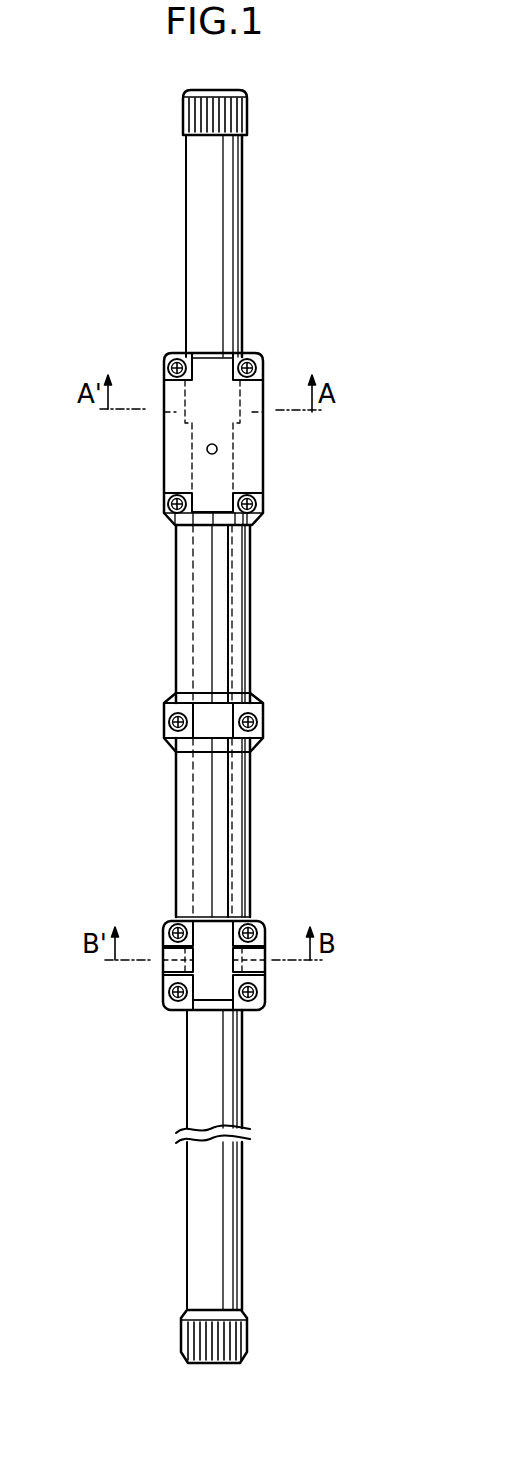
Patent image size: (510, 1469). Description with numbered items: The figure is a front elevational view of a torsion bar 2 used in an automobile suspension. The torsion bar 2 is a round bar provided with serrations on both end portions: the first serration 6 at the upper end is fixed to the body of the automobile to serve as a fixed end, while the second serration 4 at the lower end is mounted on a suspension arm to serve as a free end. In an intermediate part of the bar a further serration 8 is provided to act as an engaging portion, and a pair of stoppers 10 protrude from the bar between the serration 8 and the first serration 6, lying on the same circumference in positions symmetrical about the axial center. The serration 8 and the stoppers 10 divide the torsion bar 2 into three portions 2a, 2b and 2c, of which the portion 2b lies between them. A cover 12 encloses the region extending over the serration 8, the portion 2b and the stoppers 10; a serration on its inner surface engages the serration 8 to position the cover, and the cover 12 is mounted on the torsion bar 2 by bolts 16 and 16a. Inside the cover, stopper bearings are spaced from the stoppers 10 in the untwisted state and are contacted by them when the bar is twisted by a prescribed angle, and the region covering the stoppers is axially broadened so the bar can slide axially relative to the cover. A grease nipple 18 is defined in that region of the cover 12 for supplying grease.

The torsion bar 2 is at (258, 1160).
The portion of the torsion bar 2a is at (243, 1213).
The portion of the torsion bar 2b is at (251, 655).
The portion of the torsion bar 2c is at (243, 254).
The second serration 4 is at (248, 1343).
The first serration 6 is at (248, 122).
The serration 8 is at (266, 958).
The stoppers 10 is at (263, 415).
The cover 12 is at (251, 595).
The bolts 16 is at (263, 500).
The bolts 16a is at (266, 998).
The grease nipple 18 is at (217, 449).